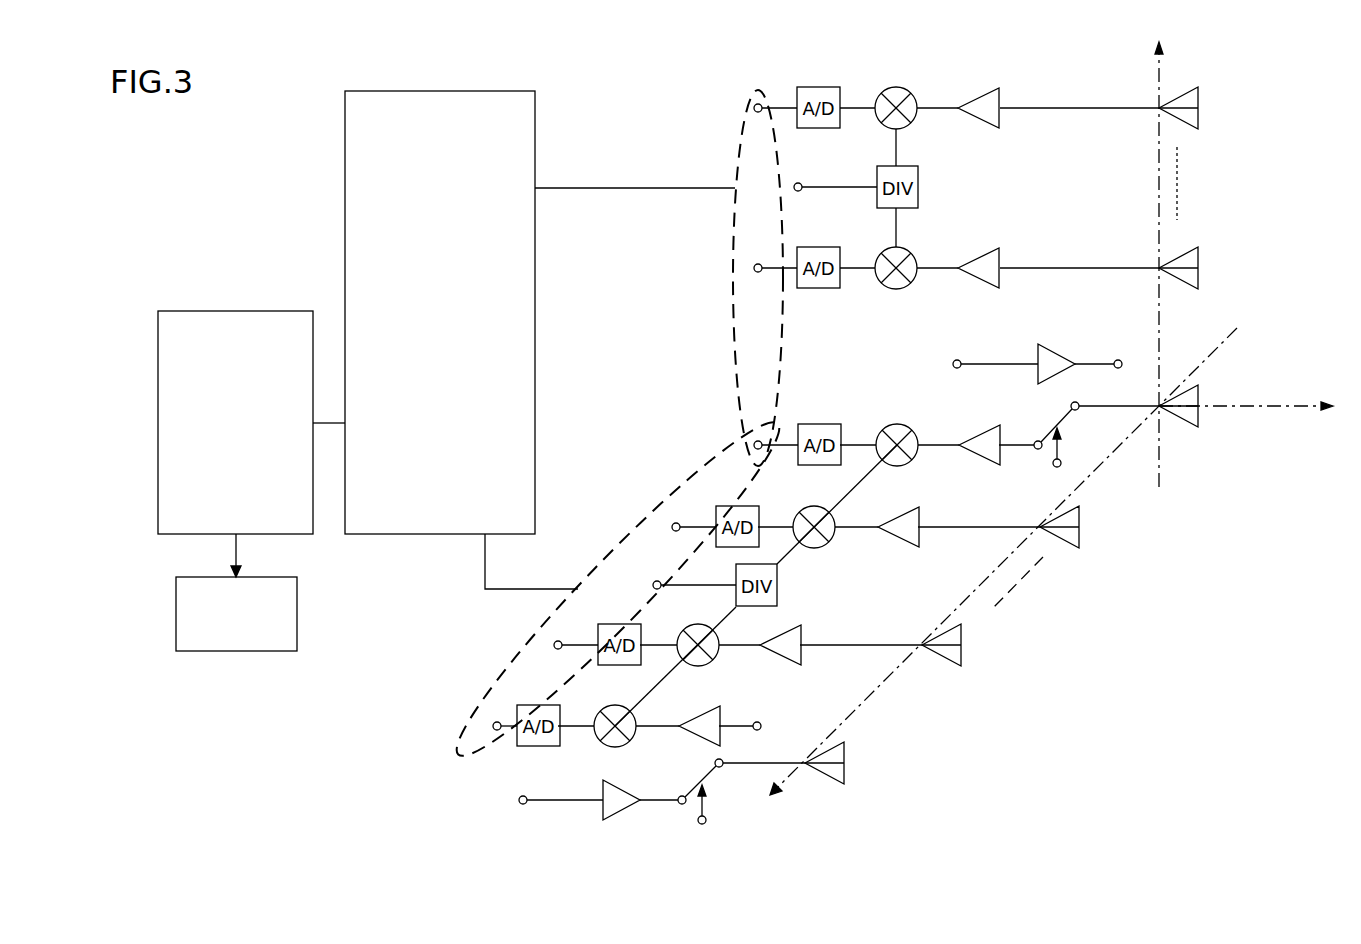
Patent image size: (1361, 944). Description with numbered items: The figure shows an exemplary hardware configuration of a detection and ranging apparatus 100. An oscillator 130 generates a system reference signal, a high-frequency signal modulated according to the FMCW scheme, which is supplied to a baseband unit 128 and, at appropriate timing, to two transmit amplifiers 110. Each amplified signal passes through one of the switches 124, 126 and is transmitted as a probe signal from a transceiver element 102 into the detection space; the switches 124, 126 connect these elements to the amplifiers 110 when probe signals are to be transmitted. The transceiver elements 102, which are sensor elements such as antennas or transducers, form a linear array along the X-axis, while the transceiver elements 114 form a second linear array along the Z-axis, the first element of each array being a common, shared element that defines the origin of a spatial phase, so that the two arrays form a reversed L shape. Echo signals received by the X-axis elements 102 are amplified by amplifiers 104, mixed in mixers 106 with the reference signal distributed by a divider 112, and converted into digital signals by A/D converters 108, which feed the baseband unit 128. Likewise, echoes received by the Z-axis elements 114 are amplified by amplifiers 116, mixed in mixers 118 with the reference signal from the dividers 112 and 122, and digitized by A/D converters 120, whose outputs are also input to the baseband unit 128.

The detection and ranging apparatus 100 is at (1229, 842).
The transceiver elements 102 is at (1113, 390).
The amplifiers 104 is at (1014, 412).
The mixers 106 is at (898, 424).
The A/D converters 108 is at (830, 413).
The amplifiers 110 is at (1038, 353).
The divider 112 is at (736, 577).
The transceiver elements 114 is at (1066, 108).
The amplifiers 116 is at (1004, 90).
The mixers 118 is at (906, 90).
The A/D converters 120 is at (812, 87).
The divider 122 is at (912, 166).
The switch 124 is at (1068, 416).
The switch 126 is at (712, 775).
The baseband unit 128 is at (470, 91).
The oscillator 130 is at (252, 311).